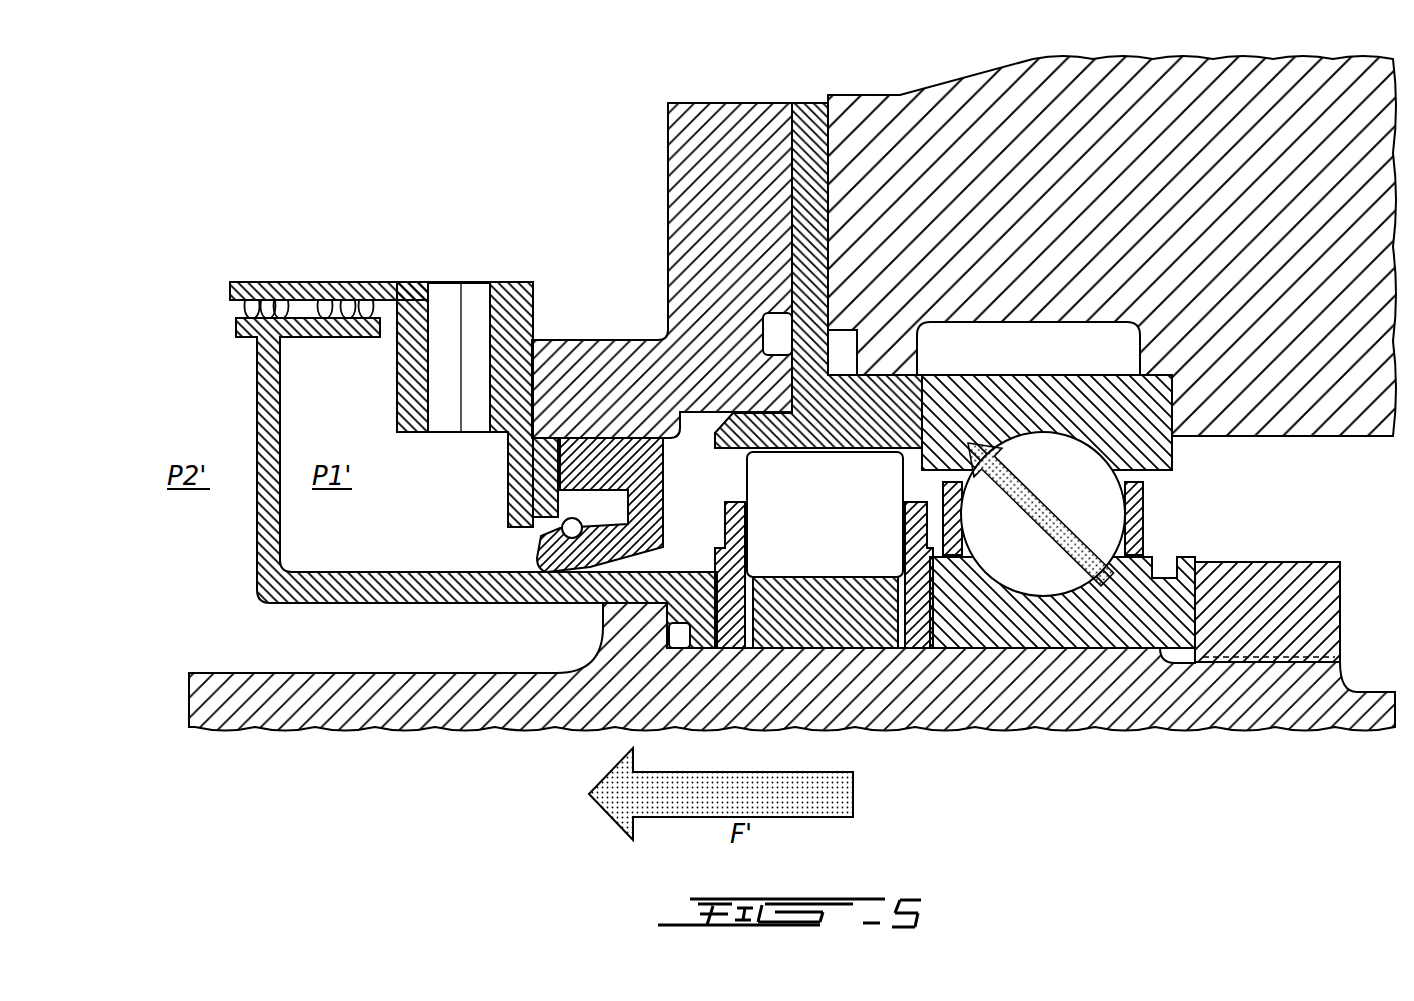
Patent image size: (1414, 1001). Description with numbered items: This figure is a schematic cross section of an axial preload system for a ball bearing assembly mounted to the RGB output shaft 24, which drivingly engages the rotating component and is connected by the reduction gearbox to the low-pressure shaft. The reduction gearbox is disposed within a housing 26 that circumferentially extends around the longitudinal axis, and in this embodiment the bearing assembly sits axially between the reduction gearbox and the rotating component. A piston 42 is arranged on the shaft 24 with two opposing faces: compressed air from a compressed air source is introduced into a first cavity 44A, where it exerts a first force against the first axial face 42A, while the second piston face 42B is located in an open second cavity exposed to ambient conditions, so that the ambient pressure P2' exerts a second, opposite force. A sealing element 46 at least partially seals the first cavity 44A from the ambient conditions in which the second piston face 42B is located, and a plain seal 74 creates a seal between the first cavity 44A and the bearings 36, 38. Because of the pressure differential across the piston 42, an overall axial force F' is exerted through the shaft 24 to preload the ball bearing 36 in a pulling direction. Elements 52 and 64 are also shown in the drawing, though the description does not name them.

The shaft 24 is at (447, 695).
The housing 26 is at (985, 190).
The ball bearing 36 is at (1030, 573).
The bearing 38 is at (312, 284).
The piston 42 is at (266, 548).
The first axial face 42A is at (283, 490).
The second piston face 42B is at (255, 383).
The first cavity 44A is at (323, 387).
The sealing element 46 is at (270, 300).
The seal ring 52 is at (472, 303).
The bearing sleeve 64 is at (1267, 618).
The plain seal 74 is at (598, 465).